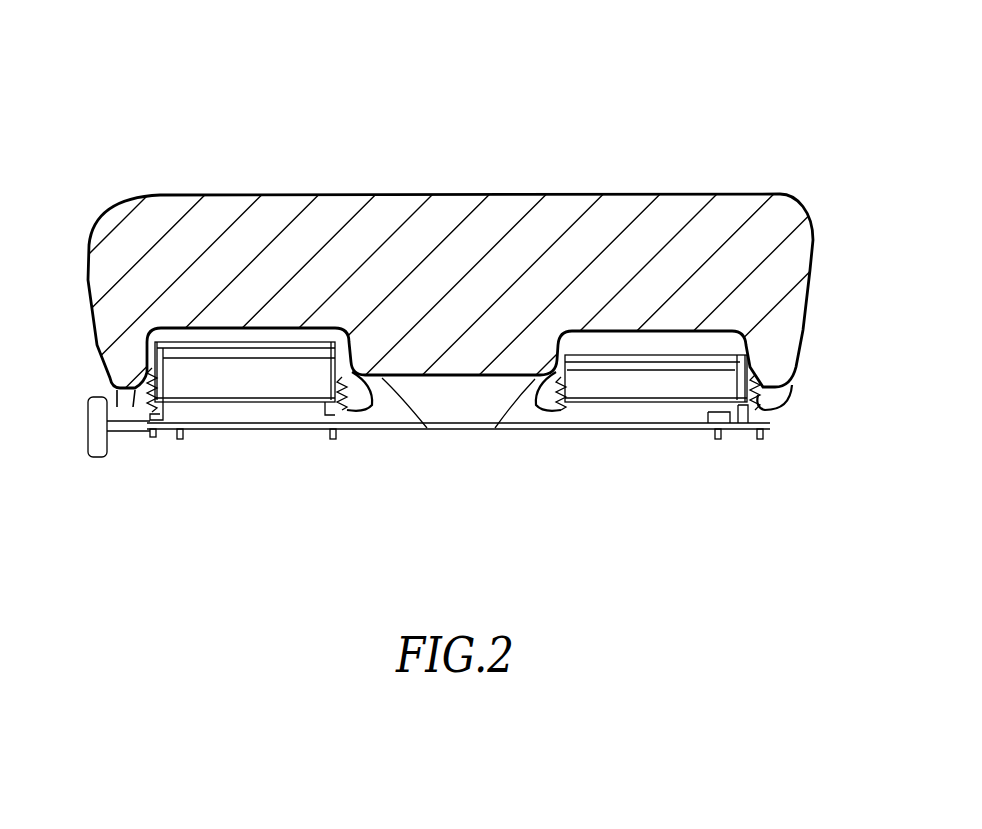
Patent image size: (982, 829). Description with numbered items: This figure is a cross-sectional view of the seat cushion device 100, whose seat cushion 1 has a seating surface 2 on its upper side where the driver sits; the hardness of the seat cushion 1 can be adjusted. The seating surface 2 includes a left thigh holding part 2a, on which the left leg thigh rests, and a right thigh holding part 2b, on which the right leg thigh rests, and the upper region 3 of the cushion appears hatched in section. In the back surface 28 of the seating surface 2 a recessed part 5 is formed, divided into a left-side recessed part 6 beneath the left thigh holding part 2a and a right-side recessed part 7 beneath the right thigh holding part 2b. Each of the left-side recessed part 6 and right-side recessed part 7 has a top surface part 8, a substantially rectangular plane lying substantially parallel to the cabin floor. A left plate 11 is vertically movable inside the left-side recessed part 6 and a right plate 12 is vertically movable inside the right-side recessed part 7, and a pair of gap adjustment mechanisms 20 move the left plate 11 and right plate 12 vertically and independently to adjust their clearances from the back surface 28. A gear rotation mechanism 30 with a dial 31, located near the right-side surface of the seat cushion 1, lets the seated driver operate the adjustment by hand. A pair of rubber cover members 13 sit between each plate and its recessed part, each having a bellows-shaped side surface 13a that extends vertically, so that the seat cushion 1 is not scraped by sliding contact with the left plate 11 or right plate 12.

The seat cushion device 100 is at (445, 296).
The seat cushion 1 is at (728, 194).
The seating surface 2 is at (468, 194).
The left thigh holding part 2a is at (641, 194).
The right thigh holding part 2b is at (228, 194).
The seating surface 3 is at (384, 194).
The recessed part 5 is at (458, 457).
The left-side recessed part 6 is at (483, 462).
The right-side recessed part 7 is at (424, 428).
The top surface part 8 is at (237, 347).
The left plate 11 is at (684, 360).
The right plate 12 is at (300, 340).
The cover member 13 is at (155, 330).
The side surface 13a is at (105, 385).
The gap adjustment mechanism 20 is at (322, 436).
The back surface 28 is at (474, 370).
The gear rotation mechanism 30 is at (106, 470).
The dial 31 is at (97, 444).